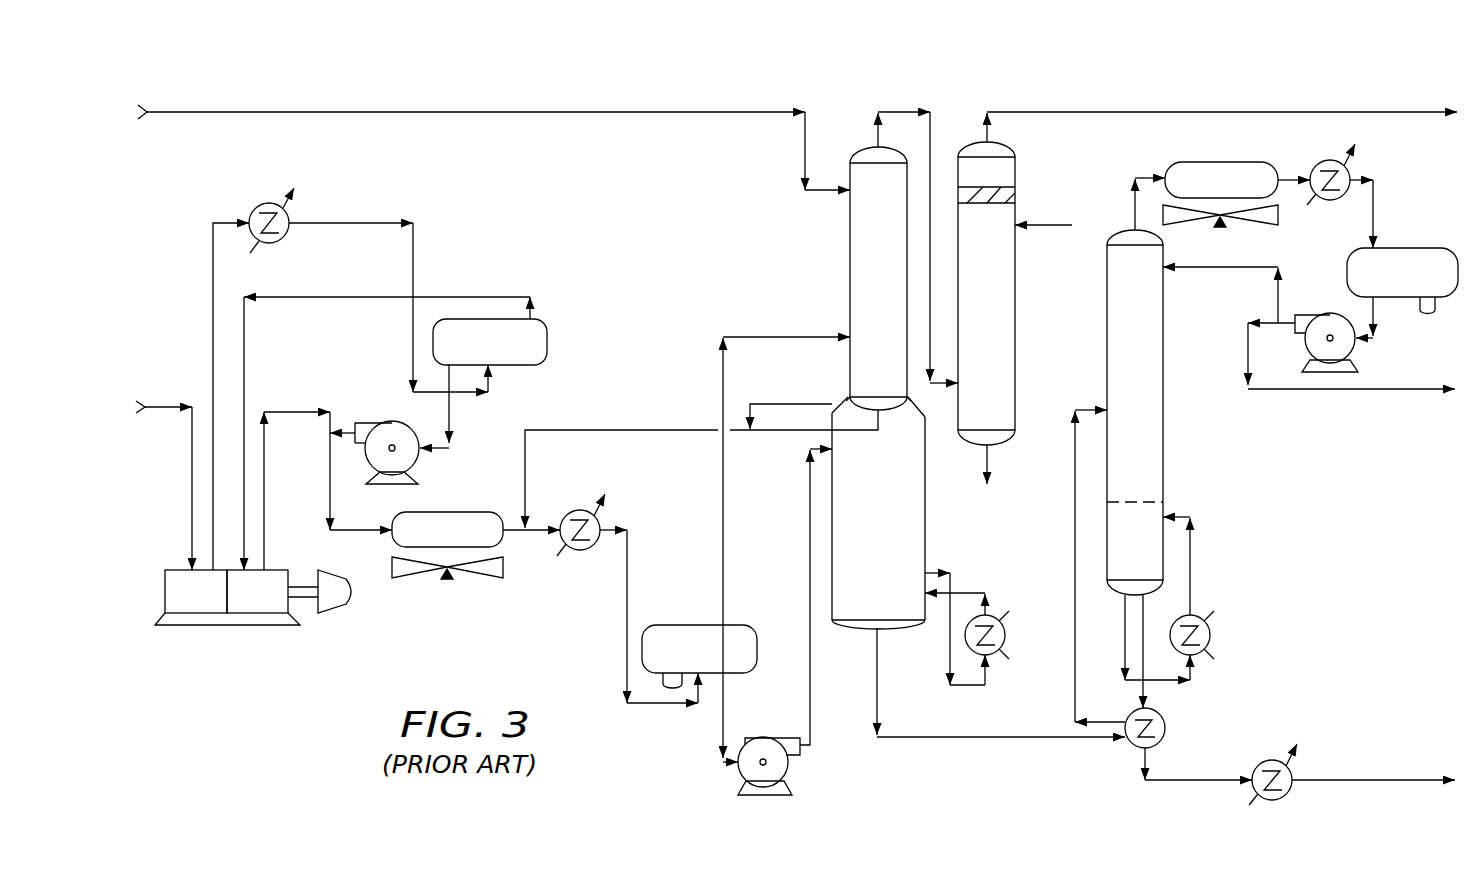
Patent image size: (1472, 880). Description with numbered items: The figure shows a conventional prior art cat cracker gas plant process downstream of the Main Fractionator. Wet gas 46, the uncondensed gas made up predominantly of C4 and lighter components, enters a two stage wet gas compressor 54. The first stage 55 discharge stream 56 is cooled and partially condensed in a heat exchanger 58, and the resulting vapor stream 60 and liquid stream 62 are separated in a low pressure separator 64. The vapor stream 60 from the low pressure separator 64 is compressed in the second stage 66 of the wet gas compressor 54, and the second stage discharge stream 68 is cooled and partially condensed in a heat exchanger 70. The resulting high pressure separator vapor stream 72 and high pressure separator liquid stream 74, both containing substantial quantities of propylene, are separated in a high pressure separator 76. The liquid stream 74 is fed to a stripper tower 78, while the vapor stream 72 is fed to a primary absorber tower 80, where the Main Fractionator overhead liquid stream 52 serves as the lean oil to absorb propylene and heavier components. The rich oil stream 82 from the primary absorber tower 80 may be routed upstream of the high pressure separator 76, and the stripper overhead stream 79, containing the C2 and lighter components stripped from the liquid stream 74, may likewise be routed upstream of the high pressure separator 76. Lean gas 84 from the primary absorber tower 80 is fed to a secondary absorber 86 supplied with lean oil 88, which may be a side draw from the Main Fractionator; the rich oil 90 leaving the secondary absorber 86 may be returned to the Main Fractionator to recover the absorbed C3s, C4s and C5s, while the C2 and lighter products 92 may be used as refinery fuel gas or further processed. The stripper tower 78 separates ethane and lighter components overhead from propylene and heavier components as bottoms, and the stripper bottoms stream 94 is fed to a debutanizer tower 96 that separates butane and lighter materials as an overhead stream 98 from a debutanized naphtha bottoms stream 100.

The wet gas 46 is at (190, 462).
The Main Fractionator overhead liquid stream 52 is at (222, 108).
The wet gas compressor 54 is at (251, 600).
The first stage 55 is at (176, 575).
The first stage discharge stream 56 is at (211, 300).
The heat exchanger 58 is at (258, 208).
The vapor stream 60 is at (473, 297).
The liquid stream 62 is at (449, 420).
The low pressure separator 64 is at (547, 340).
The second stage 66 is at (278, 575).
The second stage discharge stream 68 is at (264, 462).
The heat exchanger 70 is at (478, 578).
The high pressure separator vapor stream 72 is at (722, 481).
The high pressure separator liquid stream 74 is at (720, 738).
The high pressure separator 76 is at (669, 625).
The stripper tower 78 is at (926, 532).
The stripper overhead stream 79 is at (818, 402).
The primary absorber tower 80 is at (848, 279).
The rich oil stream 82 is at (870, 432).
The lean gas 84 is at (893, 110).
The secondary absorber 86 is at (976, 142).
The lean oil 88 is at (1045, 228).
The rich oil 90 is at (990, 456).
The C2 and lighter products 92 is at (1349, 110).
The stripper bottoms stream 94 is at (1022, 740).
The debutanizer tower 96 is at (1165, 410).
The overhead stream 98 is at (1370, 392).
The debutanized naphtha bottoms stream 100 is at (1329, 782).